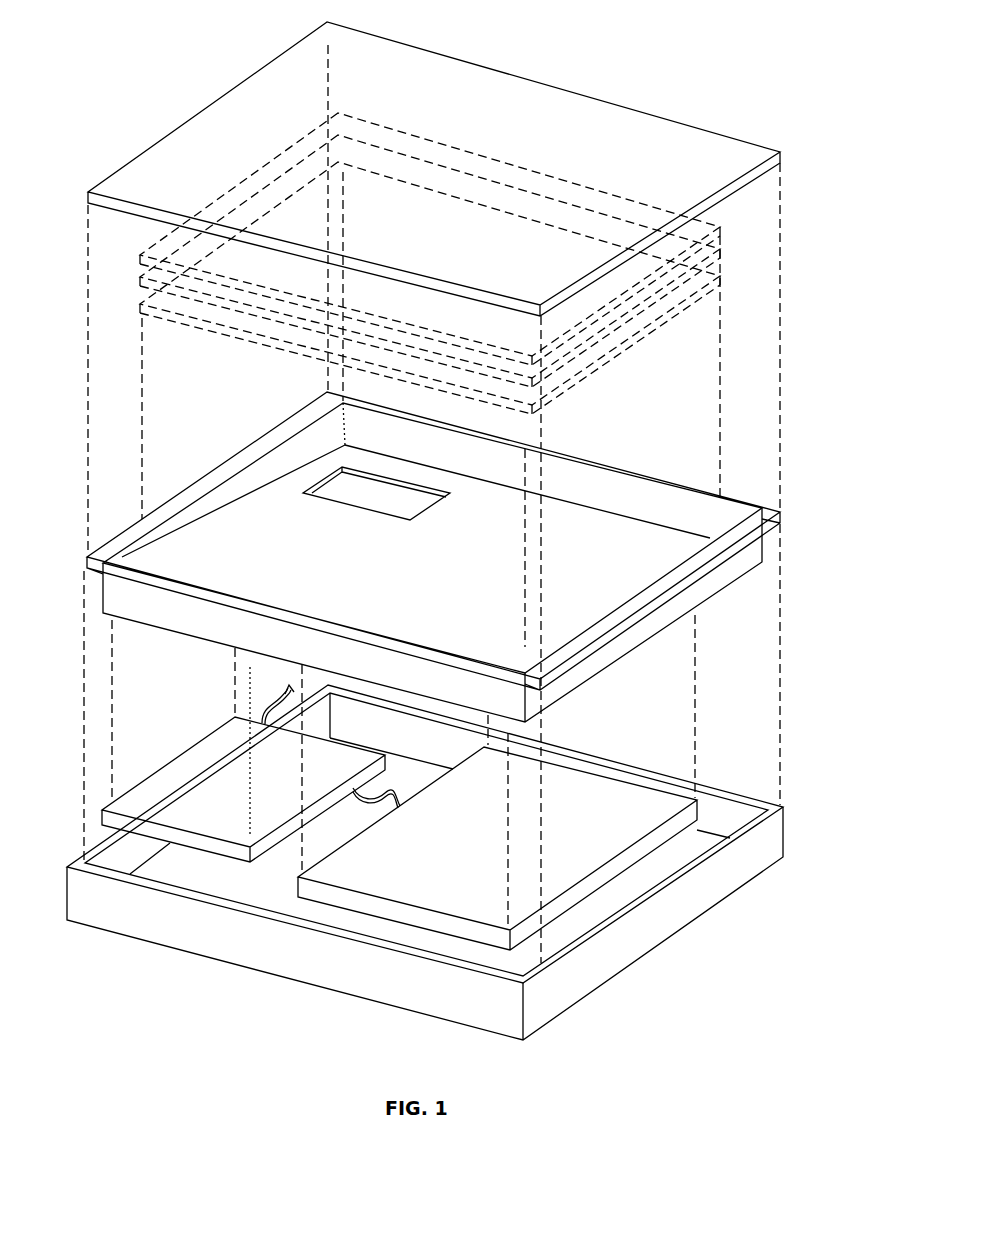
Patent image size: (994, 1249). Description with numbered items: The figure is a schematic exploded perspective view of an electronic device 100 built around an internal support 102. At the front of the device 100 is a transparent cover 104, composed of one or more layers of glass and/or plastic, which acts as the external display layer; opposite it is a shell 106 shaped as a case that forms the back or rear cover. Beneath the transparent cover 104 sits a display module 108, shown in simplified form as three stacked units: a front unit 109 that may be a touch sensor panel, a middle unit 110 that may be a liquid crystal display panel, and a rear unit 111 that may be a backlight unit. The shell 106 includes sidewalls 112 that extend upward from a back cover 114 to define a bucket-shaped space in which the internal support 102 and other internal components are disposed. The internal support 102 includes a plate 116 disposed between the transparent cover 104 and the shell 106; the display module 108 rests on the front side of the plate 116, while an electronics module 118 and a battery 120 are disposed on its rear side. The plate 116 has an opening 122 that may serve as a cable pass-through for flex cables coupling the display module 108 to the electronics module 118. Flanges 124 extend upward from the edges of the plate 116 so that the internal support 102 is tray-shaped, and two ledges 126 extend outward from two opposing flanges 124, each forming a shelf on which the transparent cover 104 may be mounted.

The electronic device 100 is at (733, 30).
The internal support 102 is at (435, 557).
The transparent cover 104 is at (580, 95).
The shell 106 is at (434, 862).
The display module 108 is at (459, 263).
The front unit 109 is at (163, 240).
The middle unit 110 is at (148, 271).
The rear unit 111 is at (148, 303).
The sidewalls 112 is at (662, 928).
The back cover 114 is at (277, 896).
The plate 116 is at (435, 574).
The electronics module 118 is at (230, 794).
The battery 120 is at (472, 867).
The opening 122 is at (425, 500).
The flanges 124 is at (120, 607).
The ledges 126 is at (248, 445).